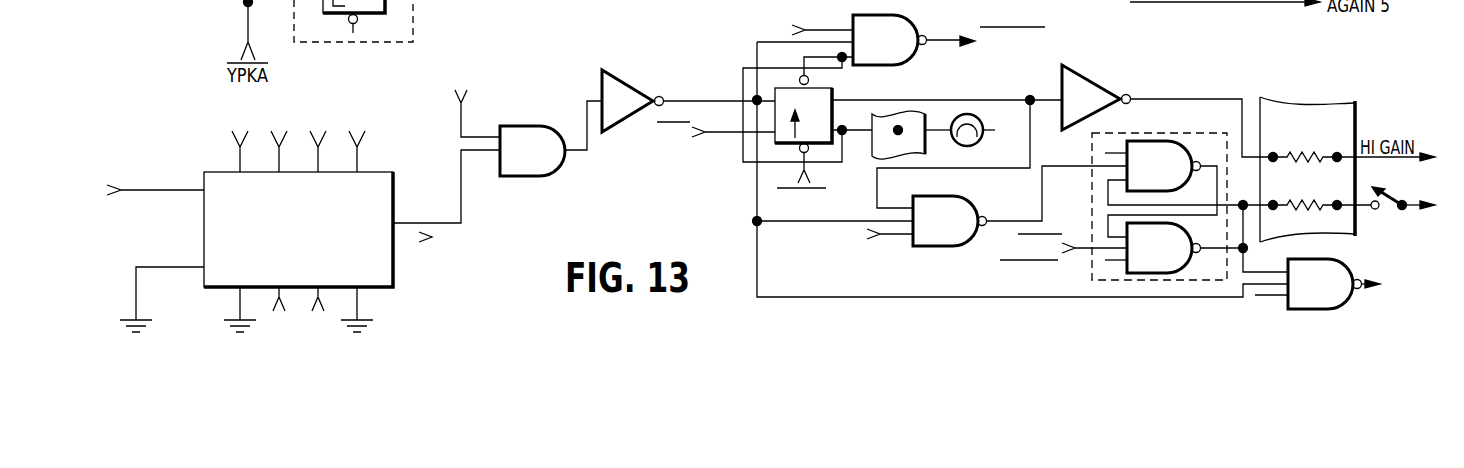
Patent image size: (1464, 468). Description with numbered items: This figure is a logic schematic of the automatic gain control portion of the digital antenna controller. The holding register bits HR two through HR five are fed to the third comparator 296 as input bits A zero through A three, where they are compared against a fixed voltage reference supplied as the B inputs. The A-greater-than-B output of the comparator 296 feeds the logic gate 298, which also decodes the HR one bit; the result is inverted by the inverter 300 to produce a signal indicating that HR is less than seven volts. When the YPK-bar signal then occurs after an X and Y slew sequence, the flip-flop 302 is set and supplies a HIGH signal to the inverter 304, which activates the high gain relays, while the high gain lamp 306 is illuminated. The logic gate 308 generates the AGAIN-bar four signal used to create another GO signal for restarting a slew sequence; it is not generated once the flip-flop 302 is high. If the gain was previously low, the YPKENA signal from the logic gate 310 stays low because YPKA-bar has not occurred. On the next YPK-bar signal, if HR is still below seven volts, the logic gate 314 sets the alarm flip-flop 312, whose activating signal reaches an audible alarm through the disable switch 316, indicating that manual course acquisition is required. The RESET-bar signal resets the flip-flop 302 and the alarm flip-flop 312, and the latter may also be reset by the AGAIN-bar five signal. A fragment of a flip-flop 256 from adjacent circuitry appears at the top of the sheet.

The flip-flop 256 is at (366, 14).
The third comparator 296 is at (394, 196).
The logic gate 298 is at (543, 176).
The inverter 300 is at (640, 73).
The flip-flop 302 is at (773, 136).
The inverter 304 is at (1083, 73).
The high gain lamp 306 is at (989, 107).
The logic gate 308 is at (911, 23).
The logic gate 310 is at (1340, 302).
The alarm flip-flop 312 is at (1172, 133).
The logic gate 314 is at (968, 238).
The disable switch 316 is at (1391, 194).